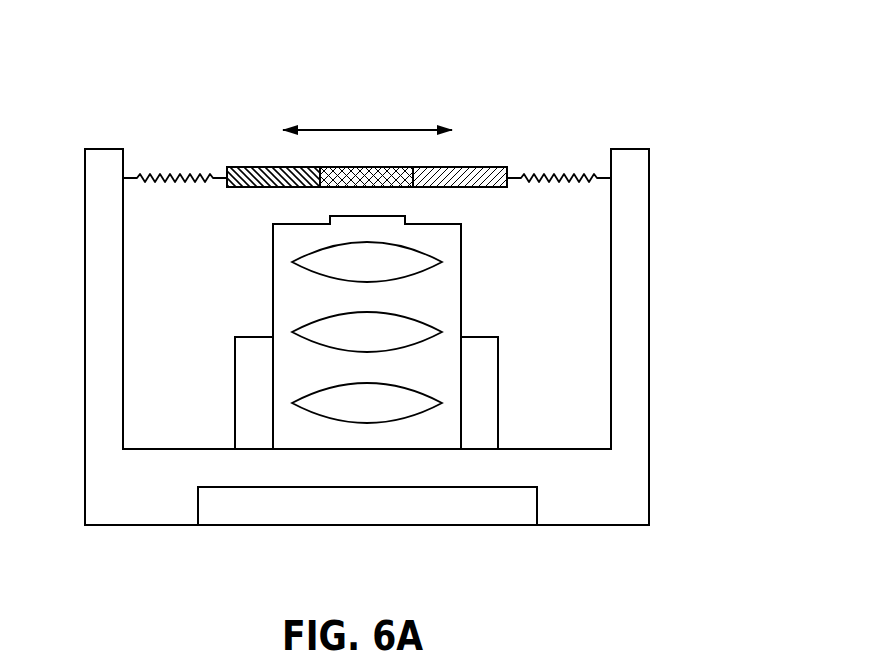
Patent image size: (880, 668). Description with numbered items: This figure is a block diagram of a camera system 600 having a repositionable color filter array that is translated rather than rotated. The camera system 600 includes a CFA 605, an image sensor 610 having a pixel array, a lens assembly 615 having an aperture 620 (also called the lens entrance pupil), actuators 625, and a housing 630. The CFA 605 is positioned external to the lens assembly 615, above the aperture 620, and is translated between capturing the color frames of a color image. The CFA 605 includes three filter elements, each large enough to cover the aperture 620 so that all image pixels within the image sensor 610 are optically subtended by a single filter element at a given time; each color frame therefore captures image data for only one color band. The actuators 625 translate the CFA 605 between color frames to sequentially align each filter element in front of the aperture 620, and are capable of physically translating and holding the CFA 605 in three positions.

The camera system 600 is at (697, 73).
The CFA 605 is at (340, 148).
The image sensor 610 is at (443, 525).
The lens assembly 615 is at (461, 297).
The aperture 620 is at (367, 216).
The actuator 625 is at (163, 177).
The housing 630 is at (649, 280).